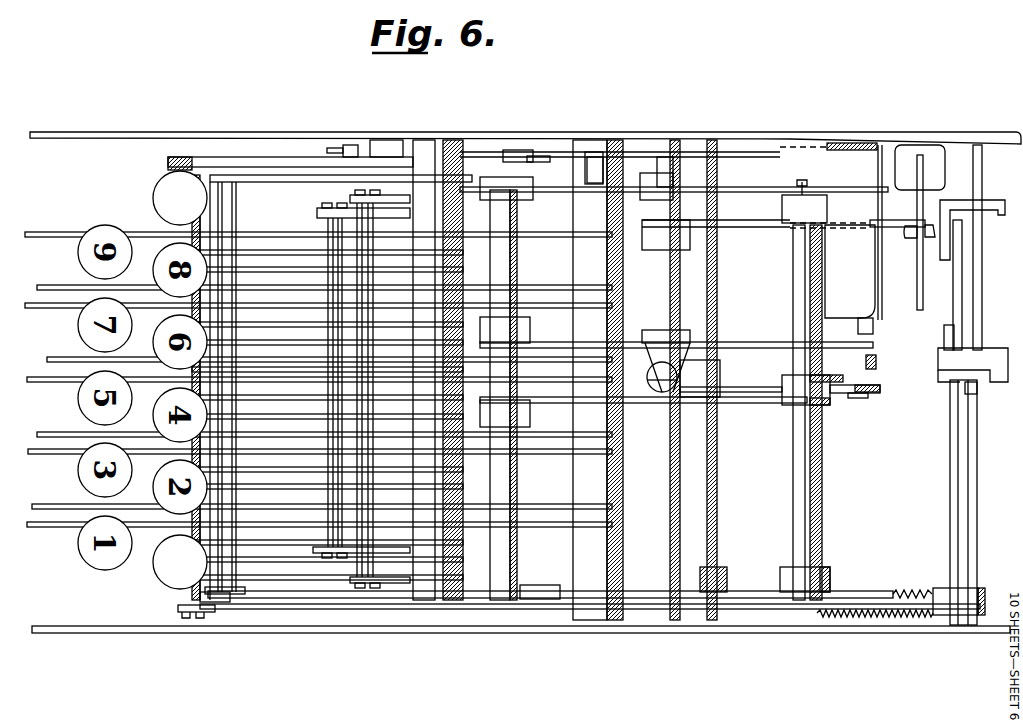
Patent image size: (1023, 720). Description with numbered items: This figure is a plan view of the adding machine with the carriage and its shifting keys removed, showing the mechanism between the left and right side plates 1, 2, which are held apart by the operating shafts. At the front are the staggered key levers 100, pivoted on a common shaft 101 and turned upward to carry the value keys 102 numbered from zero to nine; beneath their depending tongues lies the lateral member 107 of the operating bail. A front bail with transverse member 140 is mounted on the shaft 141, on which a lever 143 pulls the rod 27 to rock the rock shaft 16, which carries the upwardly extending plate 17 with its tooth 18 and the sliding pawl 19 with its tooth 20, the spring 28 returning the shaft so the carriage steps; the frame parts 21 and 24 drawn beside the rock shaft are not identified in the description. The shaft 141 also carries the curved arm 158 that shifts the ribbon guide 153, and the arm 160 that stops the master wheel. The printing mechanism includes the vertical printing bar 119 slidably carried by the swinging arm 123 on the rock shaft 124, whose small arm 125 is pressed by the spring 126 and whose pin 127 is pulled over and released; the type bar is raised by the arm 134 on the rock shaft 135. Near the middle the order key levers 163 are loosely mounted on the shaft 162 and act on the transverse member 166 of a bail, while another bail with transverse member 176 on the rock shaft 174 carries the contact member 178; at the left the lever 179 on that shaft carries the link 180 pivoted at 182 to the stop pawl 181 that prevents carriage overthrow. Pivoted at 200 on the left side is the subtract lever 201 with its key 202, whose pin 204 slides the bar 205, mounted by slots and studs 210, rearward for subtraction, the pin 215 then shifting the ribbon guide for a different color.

The left side plate 1 is at (754, 133).
The right side plate 2 is at (766, 633).
The rock shaft 16 is at (978, 501).
The upwardly extending plate 17 is at (976, 301).
The tooth 18 is at (976, 361).
The sliding pawl 19 is at (960, 279).
The tooth 20 is at (976, 388).
The upper bracket 21 is at (962, 246).
The stop lug 24 is at (950, 336).
The rod 27 is at (771, 606).
The spring 28 is at (891, 614).
The key levers 100 is at (392, 561).
The shaft 101 is at (436, 570).
The keys 102 is at (182, 580).
The lateral member 107 is at (237, 584).
The vertical printing bar 119 is at (882, 389).
The swinging arm 123 is at (838, 378).
The rock shaft 124 is at (801, 546).
The small arm 125 is at (848, 590).
The spring 126 is at (925, 590).
The pin 127 is at (802, 180).
The arm 134 is at (849, 399).
The rock shaft 135 is at (713, 623).
The transverse member 140 is at (205, 598).
The shaft 141 is at (512, 602).
The lever 143 is at (540, 600).
The ribbon guide 153 is at (876, 364).
The curved arm 158 is at (735, 344).
The arm 160 is at (760, 405).
The shaft 162 is at (602, 612).
The key levers 163 is at (65, 530).
The transverse member 166 is at (329, 534).
The rock shaft 174 is at (668, 622).
The transverse member 176 is at (371, 558).
The contact member 178 is at (637, 187).
The lever 179 is at (893, 221).
The link 180 is at (916, 240).
The stop pawl 181 is at (917, 259).
The pivot 182 is at (931, 234).
The pivot 200 is at (388, 150).
The subtract lever 201 is at (272, 158).
The key 202 is at (162, 190).
The pin 204 is at (350, 145).
The sliding bar 205 is at (573, 152).
The slots and studs 210 is at (532, 155).
The pin 215 is at (880, 350).